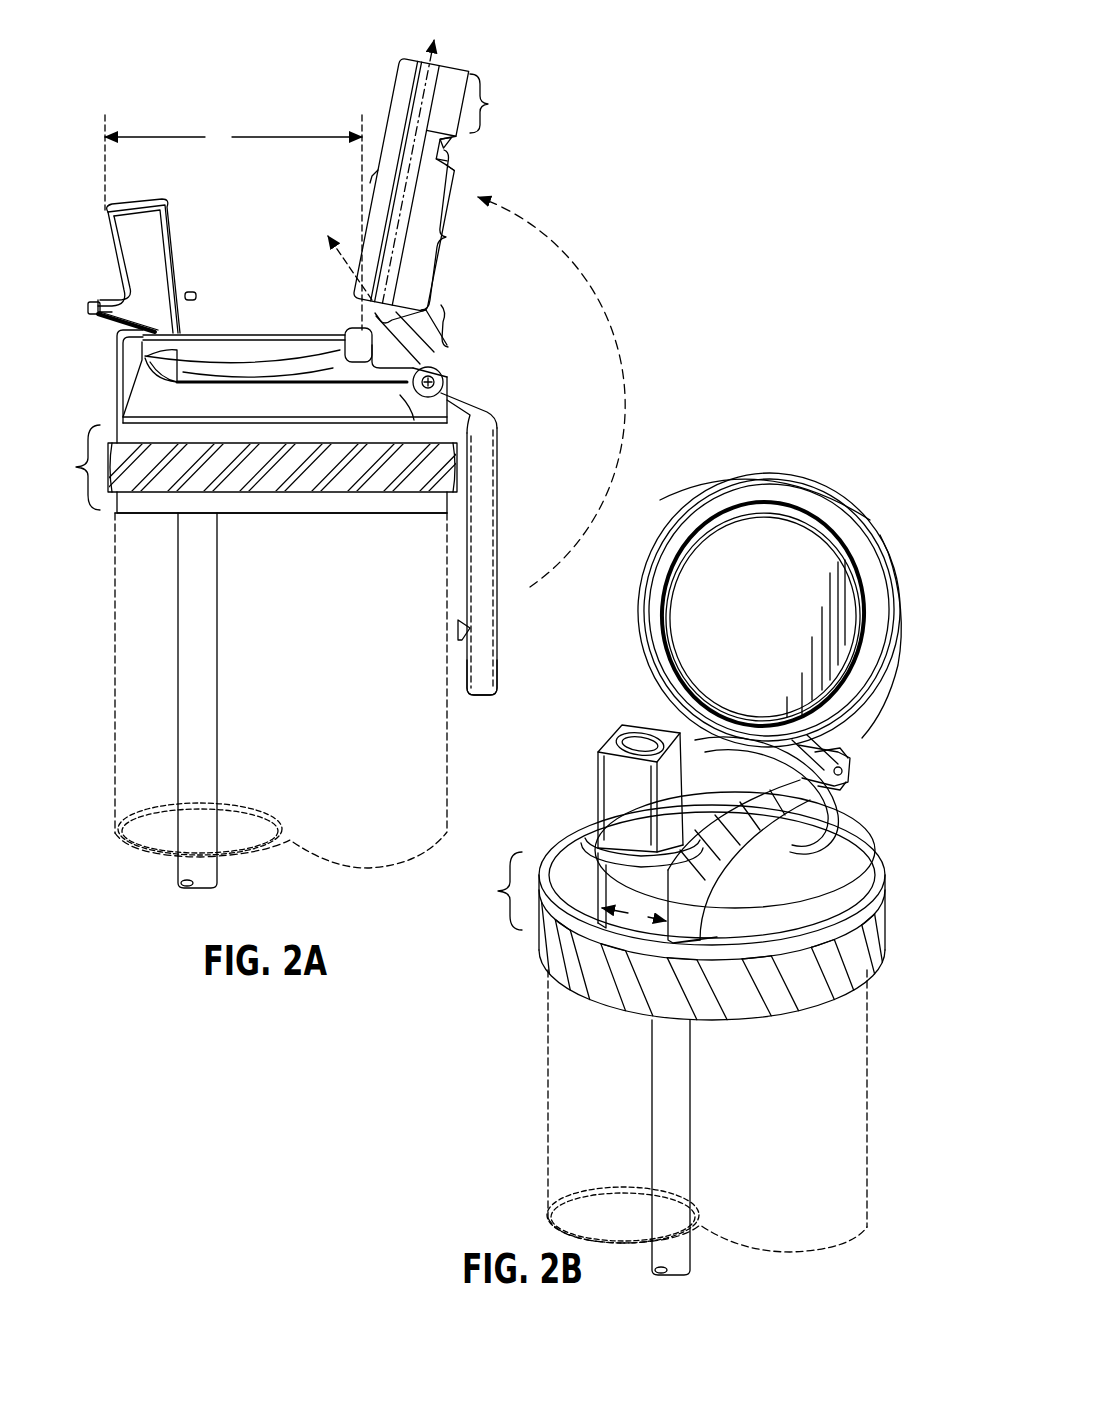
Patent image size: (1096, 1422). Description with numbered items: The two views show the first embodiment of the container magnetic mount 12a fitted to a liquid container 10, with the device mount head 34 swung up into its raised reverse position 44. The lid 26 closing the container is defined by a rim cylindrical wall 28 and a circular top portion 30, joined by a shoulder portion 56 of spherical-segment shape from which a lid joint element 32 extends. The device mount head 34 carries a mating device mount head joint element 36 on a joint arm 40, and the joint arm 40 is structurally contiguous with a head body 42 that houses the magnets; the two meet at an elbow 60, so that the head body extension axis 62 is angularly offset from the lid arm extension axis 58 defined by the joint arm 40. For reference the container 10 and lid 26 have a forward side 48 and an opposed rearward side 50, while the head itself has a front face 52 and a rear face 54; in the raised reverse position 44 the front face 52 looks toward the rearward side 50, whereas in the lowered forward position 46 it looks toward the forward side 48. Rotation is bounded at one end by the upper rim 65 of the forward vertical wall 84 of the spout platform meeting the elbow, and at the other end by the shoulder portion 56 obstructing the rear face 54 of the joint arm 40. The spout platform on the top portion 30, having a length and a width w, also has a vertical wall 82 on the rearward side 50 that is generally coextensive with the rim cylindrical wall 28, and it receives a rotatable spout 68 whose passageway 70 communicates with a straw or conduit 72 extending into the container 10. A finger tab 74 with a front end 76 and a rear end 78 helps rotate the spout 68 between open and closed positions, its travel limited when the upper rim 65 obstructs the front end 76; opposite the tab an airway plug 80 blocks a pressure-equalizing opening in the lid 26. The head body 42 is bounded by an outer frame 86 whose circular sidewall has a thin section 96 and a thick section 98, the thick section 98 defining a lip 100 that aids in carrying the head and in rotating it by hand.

In FIG. 2A, the liquid container 10 is at (114, 661).
In FIG. 2A, the container magnetic mount 12a is at (242, 91).
In FIG. 2B, the container magnetic mount 12a is at (633, 635).
In FIG. 2A, the lid 26 is at (320, 495).
In FIG. 2B, the lid 26 is at (886, 893).
In FIG. 2A, the rim cylindrical wall 28 is at (246, 467).
In FIG. 2B, the rim cylindrical wall 28 is at (679, 912).
In FIG. 2A, the circular top portion 30 is at (150, 354).
In FIG. 2B, the circular top portion 30 is at (813, 827).
In FIG. 2A, the lid joint element 32 is at (465, 402).
In FIG. 2B, the device mount head 34 is at (897, 640).
In FIG. 2A, the device mount head joint element 36 is at (444, 381).
In FIG. 2B, the device mount head joint element 36 is at (842, 763).
In FIG. 2A, the joint arm 40 is at (423, 334).
In FIG. 2A, the head body 42 is at (372, 174).
In FIG. 2A, the raised reverse position 44 is at (422, 152).
In FIG. 2A, the lowered forward position 46 is at (479, 692).
In FIG. 2A, the forward side 48 is at (500, 482).
In FIG. 2A, the rearward side 50 is at (92, 517).
In FIG. 2A, the front face 52 is at (368, 90).
In FIG. 2B, the front face 52 is at (640, 668).
In FIG. 2A, the rear face 54 is at (455, 153).
In FIG. 2A, the shoulder portion 56 is at (180, 390).
In FIG. 2B, the shoulder portion 56 is at (853, 834).
In FIG. 2A, the lid arm extension axis 58 is at (345, 256).
In FIG. 2A, the elbow 60 is at (430, 318).
In FIG. 2A, the head body extension axis 62 is at (430, 83).
In FIG. 2A, the upper rim 65 is at (237, 334).
In FIG. 2B, the upper rim 65 is at (760, 848).
In FIG. 2A, the rotatable spout 68 is at (130, 243).
In FIG. 2B, the rotatable spout 68 is at (612, 779).
In FIG. 2B, the passageway 70 is at (616, 735).
In FIG. 2A, the straw or conduit 72 is at (185, 608).
In FIG. 2A, the finger tab 74 is at (88, 308).
In FIG. 2B, the finger tab 74 is at (588, 838).
In FIG. 2A, the front end 76 is at (100, 321).
In FIG. 2A, the rear end 78 is at (98, 292).
In FIG. 2A, the airway plug 80 is at (192, 292).
In FIG. 2A, the vertical wall 82 is at (117, 368).
In FIG. 2B, the vertical wall 82 is at (565, 945).
In FIG. 2A, the vertical wall 84 is at (400, 395).
In FIG. 2A, the outer frame 86 is at (418, 173).
In FIG. 2B, the outer frame 86 is at (627, 918).
In FIG. 2A, the thin section 96 is at (450, 230).
In FIG. 2B, the thin section 96 is at (898, 573).
In FIG. 2A, the thick section 98 is at (472, 105).
In FIG. 2B, the thick section 98 is at (838, 487).
In FIG. 2A, the lip 100 is at (452, 138).